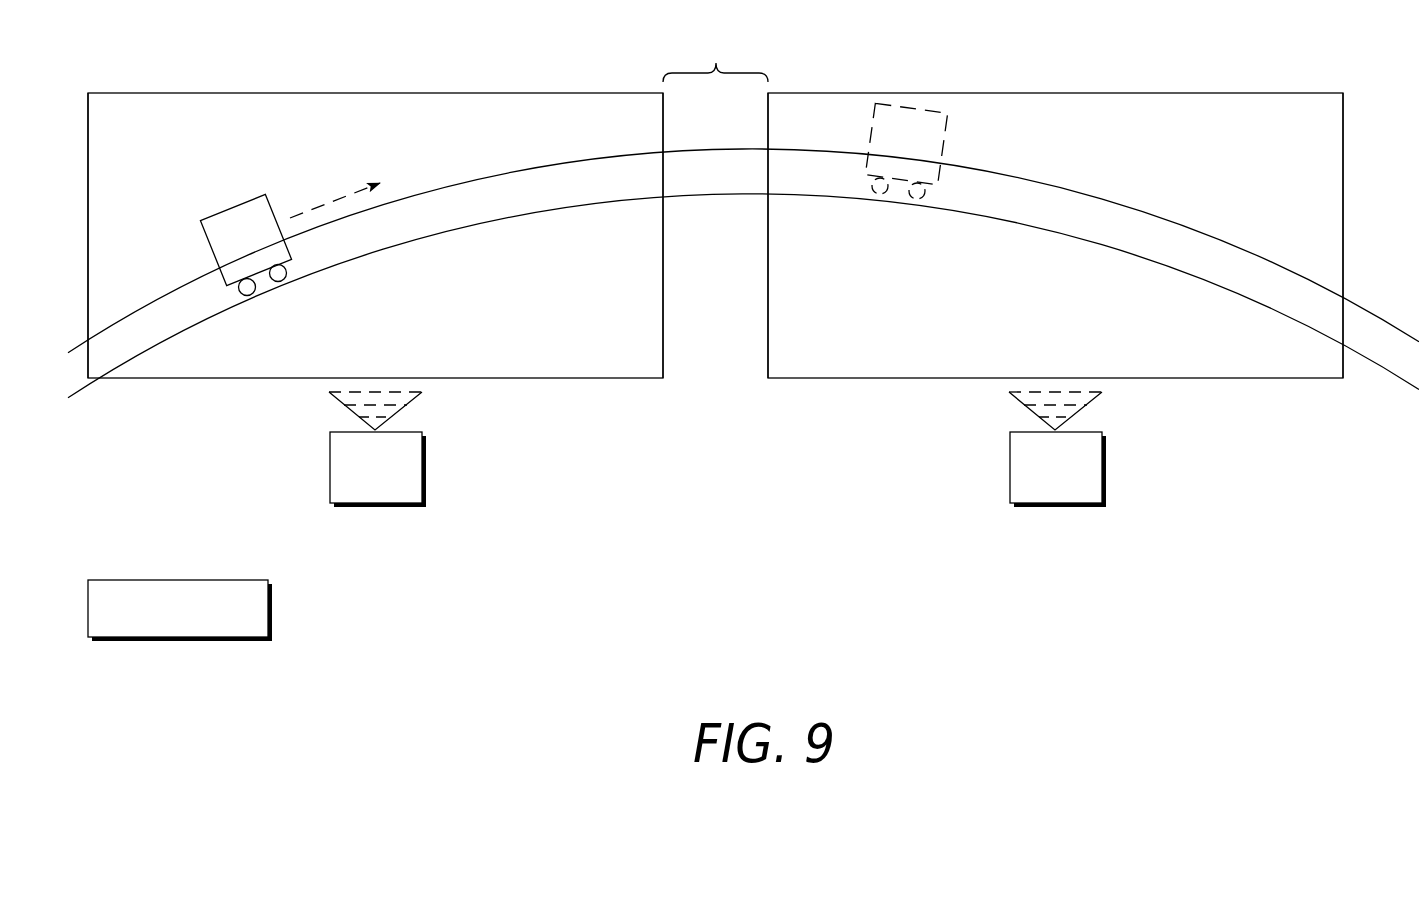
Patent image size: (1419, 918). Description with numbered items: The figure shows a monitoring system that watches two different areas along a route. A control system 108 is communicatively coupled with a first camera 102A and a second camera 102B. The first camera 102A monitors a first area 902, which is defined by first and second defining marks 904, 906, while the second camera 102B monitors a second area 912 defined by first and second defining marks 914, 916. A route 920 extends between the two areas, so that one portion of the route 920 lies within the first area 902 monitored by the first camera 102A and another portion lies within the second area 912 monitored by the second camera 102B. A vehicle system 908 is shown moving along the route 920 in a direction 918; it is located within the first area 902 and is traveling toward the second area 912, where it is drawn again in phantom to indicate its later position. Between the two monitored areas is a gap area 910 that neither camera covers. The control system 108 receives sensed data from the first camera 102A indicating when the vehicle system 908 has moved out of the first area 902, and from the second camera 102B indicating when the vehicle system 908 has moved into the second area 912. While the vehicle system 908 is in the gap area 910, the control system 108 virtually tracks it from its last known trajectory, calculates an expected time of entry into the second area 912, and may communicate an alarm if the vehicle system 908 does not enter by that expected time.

The first area 902 is at (204, 91).
The first defining mark 904 is at (93, 192).
The second defining mark 906 is at (659, 280).
The vehicle system 908 is at (264, 253).
The gap area 910 is at (716, 63).
The second area 912 is at (852, 90).
The first defining mark 914 is at (774, 313).
The second defining mark 916 is at (1338, 146).
The direction 918 is at (341, 200).
The route 920 is at (514, 170).
The first camera 102A is at (430, 467).
The second camera 102B is at (1110, 467).
The control system 108 is at (242, 579).